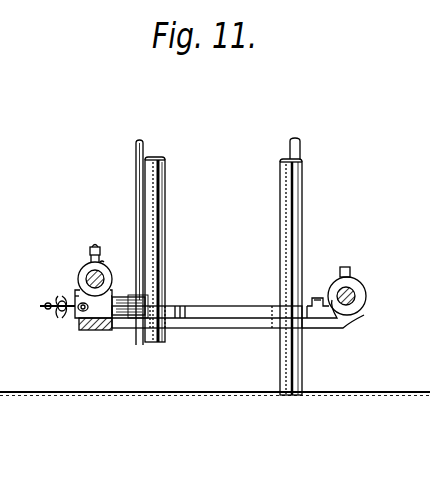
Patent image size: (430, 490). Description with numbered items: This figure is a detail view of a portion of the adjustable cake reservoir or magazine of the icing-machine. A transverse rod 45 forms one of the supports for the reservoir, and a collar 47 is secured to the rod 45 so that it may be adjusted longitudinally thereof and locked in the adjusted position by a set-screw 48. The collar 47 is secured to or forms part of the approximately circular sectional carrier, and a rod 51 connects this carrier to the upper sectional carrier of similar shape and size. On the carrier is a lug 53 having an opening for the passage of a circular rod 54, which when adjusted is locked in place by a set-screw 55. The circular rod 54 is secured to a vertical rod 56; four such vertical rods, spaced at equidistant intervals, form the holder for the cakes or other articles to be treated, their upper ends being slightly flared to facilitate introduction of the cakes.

The transverse rod 45 is at (86, 265).
The collar 47 is at (103, 262).
The set-screw 48 is at (93, 247).
The rod 51 is at (144, 148).
The lug 53 is at (131, 300).
The circular rod 54 is at (56, 305).
The set-screw 55 is at (84, 303).
The vertical rod 56 is at (156, 207).